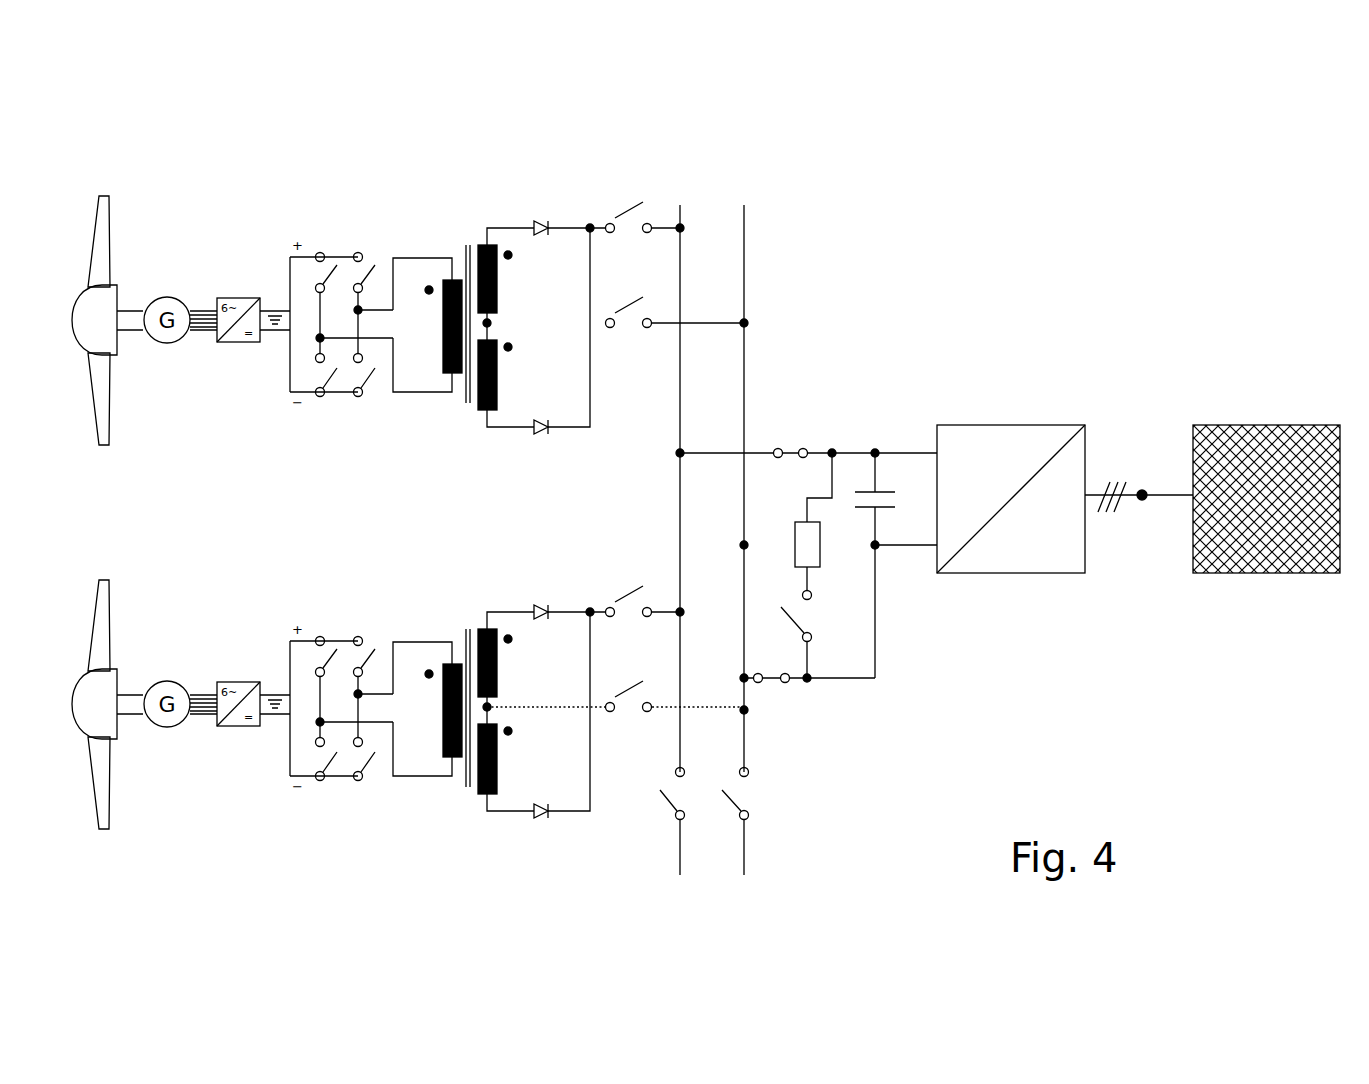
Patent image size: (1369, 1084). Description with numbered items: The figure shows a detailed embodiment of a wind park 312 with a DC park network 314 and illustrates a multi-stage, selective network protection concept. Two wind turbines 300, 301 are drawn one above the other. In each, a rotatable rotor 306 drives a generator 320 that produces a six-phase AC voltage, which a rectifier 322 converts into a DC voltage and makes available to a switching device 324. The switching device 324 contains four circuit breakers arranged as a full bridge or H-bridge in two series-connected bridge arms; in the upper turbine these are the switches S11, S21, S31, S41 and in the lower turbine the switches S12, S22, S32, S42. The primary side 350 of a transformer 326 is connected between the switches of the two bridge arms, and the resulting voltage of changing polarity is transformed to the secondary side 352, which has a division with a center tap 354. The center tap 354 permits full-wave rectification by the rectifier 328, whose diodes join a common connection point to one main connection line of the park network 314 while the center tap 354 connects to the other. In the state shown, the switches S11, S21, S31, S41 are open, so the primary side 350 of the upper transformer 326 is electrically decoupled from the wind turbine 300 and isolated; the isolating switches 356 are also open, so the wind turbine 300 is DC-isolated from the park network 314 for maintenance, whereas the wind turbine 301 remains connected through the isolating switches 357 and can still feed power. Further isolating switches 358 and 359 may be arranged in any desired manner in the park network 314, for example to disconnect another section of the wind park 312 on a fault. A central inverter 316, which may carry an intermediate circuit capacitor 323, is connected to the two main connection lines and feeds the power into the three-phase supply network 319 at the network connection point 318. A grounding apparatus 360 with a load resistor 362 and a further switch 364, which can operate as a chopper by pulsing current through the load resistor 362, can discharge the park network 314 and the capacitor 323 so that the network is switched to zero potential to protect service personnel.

The wind turbine 300 is at (182, 246).
The wind turbine 301 is at (152, 606).
The rotor 306 is at (85, 218).
The wind park 312 is at (920, 198).
The park network 314 is at (716, 200).
The central inverter 316 is at (1010, 423).
The network connection point 318 is at (1142, 502).
The electrical three-phase supply network 319 is at (1238, 423).
The generator 320 is at (167, 344).
The rectifier 322 is at (250, 343).
The capacitor 323 is at (882, 462).
The switching device 324 is at (353, 242).
The transformer 326 is at (474, 222).
The rectifier 328 is at (546, 220).
The primary side 350 is at (450, 415).
The secondary side 352 is at (473, 422).
The center tap 354 is at (493, 322).
The isolating switches 356 is at (647, 234).
The isolating switches 357 is at (647, 618).
The isolating switches 358 is at (676, 822).
The isolating switches 359 is at (778, 447).
The grounding apparatus 360 is at (778, 580).
The load resistor 362 is at (821, 546).
The switch 364 is at (813, 638).
The switch S11 is at (320, 252).
The switch S21 is at (320, 397).
The switch S31 is at (361, 252).
The switch S41 is at (358, 397).
The switch S12 is at (320, 636).
The switch S22 is at (320, 781).
The switch S32 is at (361, 636).
The switch S42 is at (358, 781).